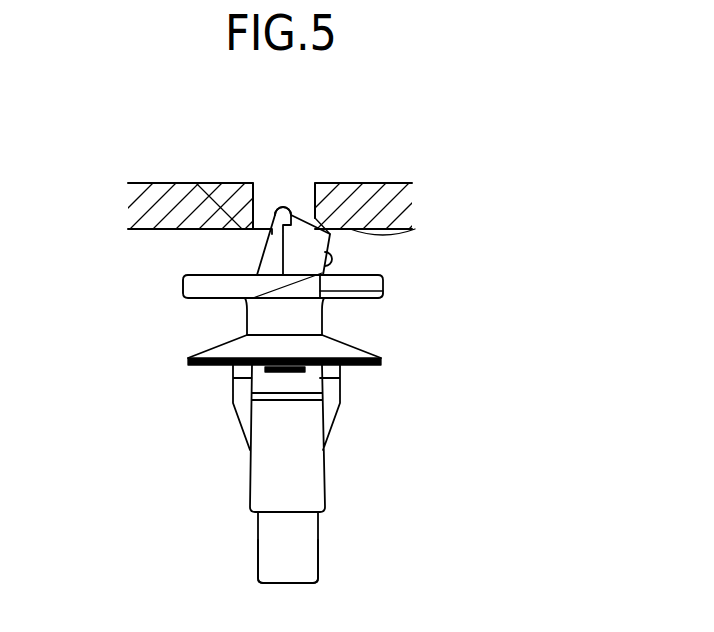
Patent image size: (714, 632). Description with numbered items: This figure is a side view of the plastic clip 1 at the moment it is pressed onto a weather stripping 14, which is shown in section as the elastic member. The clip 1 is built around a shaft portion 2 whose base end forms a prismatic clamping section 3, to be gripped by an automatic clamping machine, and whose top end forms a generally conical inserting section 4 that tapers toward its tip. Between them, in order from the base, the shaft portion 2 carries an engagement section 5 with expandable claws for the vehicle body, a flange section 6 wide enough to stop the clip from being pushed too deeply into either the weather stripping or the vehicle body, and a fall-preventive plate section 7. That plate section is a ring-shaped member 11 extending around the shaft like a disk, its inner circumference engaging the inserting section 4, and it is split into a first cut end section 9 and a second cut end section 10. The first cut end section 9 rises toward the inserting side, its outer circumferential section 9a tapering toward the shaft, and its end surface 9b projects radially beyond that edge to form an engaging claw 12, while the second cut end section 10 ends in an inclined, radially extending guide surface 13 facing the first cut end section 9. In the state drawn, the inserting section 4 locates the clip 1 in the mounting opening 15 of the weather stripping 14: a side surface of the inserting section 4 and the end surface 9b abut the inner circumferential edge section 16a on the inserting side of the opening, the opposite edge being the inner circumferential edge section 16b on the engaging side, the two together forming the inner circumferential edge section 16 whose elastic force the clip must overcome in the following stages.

The clip 1 is at (473, 317).
The shaft portion 2 is at (257, 567).
The clamping section 3 is at (310, 563).
The inserting section 4 is at (200, 183).
The engagement section 5 is at (345, 412).
The flange section 6 is at (370, 348).
The fall-preventive plate section 7 is at (182, 298).
The first cut end section 9 is at (303, 257).
The outer circumferential section 9a is at (253, 298).
The end surface 9b is at (328, 218).
The second cut end section 10 is at (383, 298).
The ring-shaped member 11 is at (213, 290).
The engaging claw 12 is at (330, 236).
The guide surface 13 is at (362, 283).
The weather stripping 14 is at (388, 183).
The mounting opening 15 is at (273, 183).
The inner circumferential edge section 16 is at (293, 187).
The inner circumferential edge section on the inserting side 16a is at (415, 229).
The inner circumferential edge section on the engaging side 16b is at (317, 187).